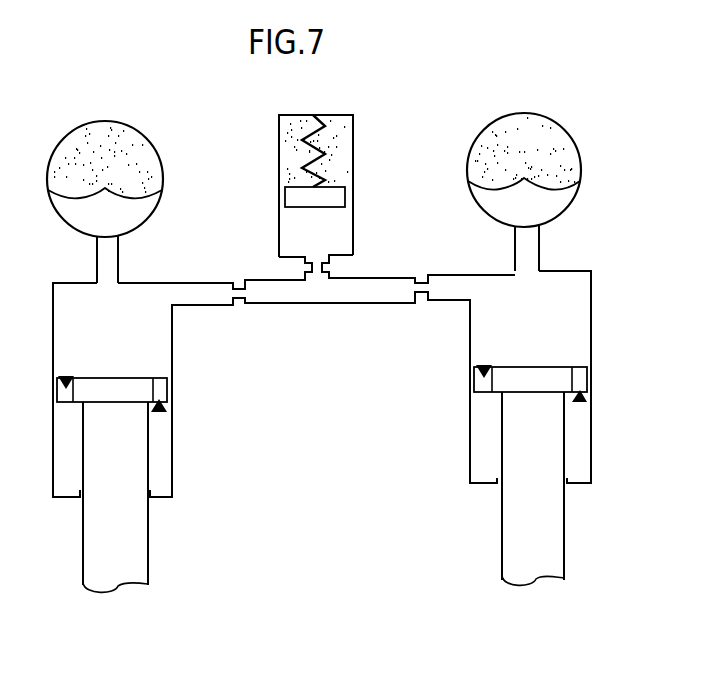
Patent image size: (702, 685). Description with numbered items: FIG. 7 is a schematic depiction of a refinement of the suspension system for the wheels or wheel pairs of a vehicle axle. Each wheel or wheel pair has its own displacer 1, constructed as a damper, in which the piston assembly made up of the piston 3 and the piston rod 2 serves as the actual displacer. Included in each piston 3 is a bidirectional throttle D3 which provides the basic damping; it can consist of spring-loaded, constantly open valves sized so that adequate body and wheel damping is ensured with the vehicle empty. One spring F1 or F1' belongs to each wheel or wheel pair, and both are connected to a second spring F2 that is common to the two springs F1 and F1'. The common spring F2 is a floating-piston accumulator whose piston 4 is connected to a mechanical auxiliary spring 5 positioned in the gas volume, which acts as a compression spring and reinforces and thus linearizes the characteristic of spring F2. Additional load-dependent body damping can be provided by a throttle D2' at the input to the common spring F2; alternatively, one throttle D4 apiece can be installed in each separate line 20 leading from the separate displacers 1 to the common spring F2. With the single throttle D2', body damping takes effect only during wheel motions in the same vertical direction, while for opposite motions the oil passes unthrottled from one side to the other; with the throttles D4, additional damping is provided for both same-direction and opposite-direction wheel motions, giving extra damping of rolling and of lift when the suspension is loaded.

The displacer 1 is at (47, 442).
The piston rod 2 is at (100, 530).
The piston 3 is at (108, 385).
The piston 4 is at (335, 200).
The auxiliary spring 5 is at (325, 160).
The separate line 20 is at (256, 278).
The spring F1 is at (105, 177).
The spring F1' is at (524, 164).
The second spring F2 is at (318, 112).
The bidirectional throttle D3 is at (319, 389).
The throttle D4 is at (330, 310).
The throttle D2' is at (323, 300).